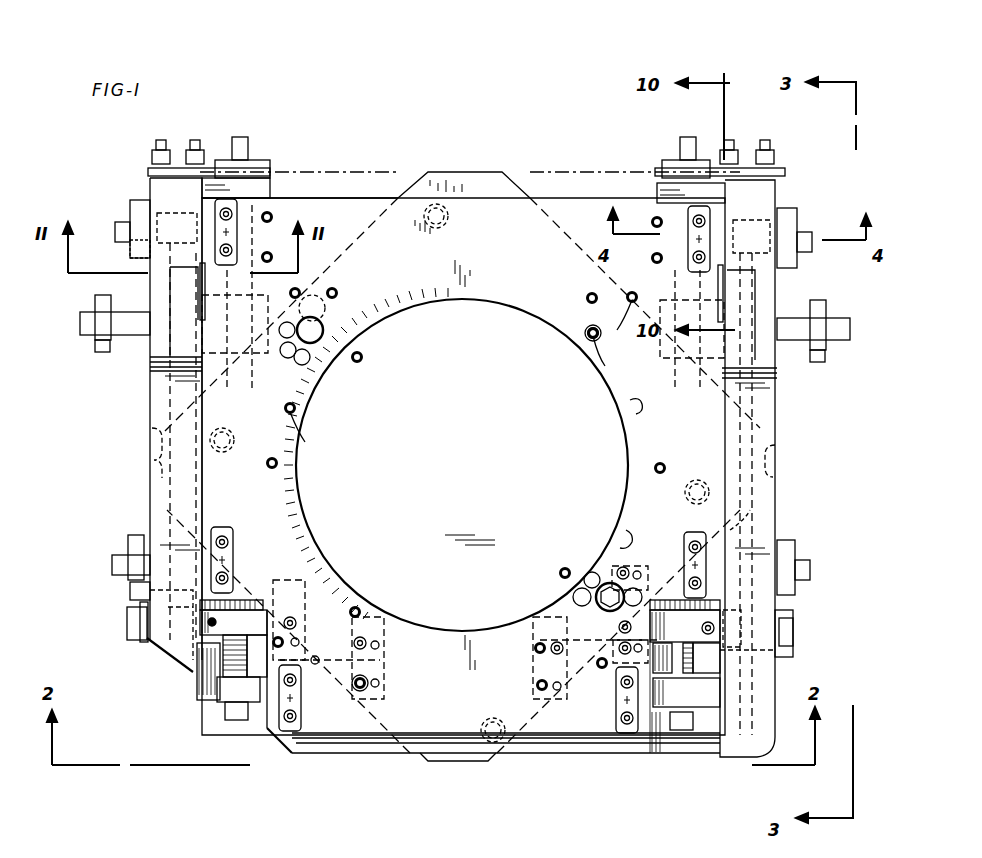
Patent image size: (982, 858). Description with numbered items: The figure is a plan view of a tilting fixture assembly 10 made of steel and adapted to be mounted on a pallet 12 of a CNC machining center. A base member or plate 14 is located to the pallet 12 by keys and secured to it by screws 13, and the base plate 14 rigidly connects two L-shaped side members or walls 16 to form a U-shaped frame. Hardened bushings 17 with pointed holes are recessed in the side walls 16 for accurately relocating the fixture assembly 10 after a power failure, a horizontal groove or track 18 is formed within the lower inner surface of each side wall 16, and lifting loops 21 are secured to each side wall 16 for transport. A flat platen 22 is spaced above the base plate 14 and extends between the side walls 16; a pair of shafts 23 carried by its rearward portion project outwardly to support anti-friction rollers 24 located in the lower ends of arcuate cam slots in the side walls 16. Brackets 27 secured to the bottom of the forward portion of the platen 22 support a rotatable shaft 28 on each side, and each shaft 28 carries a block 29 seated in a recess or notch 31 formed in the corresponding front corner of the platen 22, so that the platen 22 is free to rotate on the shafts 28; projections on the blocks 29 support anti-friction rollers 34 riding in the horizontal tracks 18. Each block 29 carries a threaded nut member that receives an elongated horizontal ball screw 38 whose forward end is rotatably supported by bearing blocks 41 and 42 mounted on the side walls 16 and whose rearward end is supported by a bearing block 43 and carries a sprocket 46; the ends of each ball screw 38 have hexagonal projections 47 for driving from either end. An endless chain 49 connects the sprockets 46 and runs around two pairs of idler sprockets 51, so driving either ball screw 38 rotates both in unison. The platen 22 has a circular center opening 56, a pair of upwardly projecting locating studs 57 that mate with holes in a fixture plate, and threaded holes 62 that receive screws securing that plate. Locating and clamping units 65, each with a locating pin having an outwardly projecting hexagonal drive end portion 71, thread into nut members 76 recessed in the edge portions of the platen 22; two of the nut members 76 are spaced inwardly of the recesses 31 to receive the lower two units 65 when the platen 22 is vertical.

The fixture assembly 10 is at (463, 152).
The pallet 12 is at (502, 193).
The screws 13 is at (453, 217).
The base member or plate 14 is at (546, 754).
The L-shaped side members or walls 16 is at (150, 472).
The hardened bushings 17 is at (150, 430).
The horizontal groove or track 18 is at (752, 522).
The lifting loops 21 is at (795, 631).
The flat platen 22 is at (380, 196).
The shafts 23 is at (232, 358).
The anti-friction rollers 24 is at (144, 368).
The brackets 27 is at (360, 602).
The rotatable shaft 28 is at (341, 606).
The block 29 is at (260, 596).
The recess or notch 31 is at (272, 730).
The anti-friction rollers 34 is at (166, 662).
The ball screw 38 is at (225, 673).
The bearing block 41 is at (717, 698).
The bearing block 42 is at (228, 697).
The bearing block 43 is at (272, 183).
The sprocket 46 is at (265, 166).
The hexagonal projections 47 is at (239, 136).
The endless chain 49 is at (354, 172).
The idler sprockets 51 is at (178, 160).
The circular center opening 56 is at (546, 312).
The locating studs 57 is at (318, 330).
The threaded holes 62 is at (593, 374).
The locating and clamping units 65 is at (138, 200).
The hexagonal drive end portion 71 is at (98, 322).
The nut member 76 is at (215, 200).